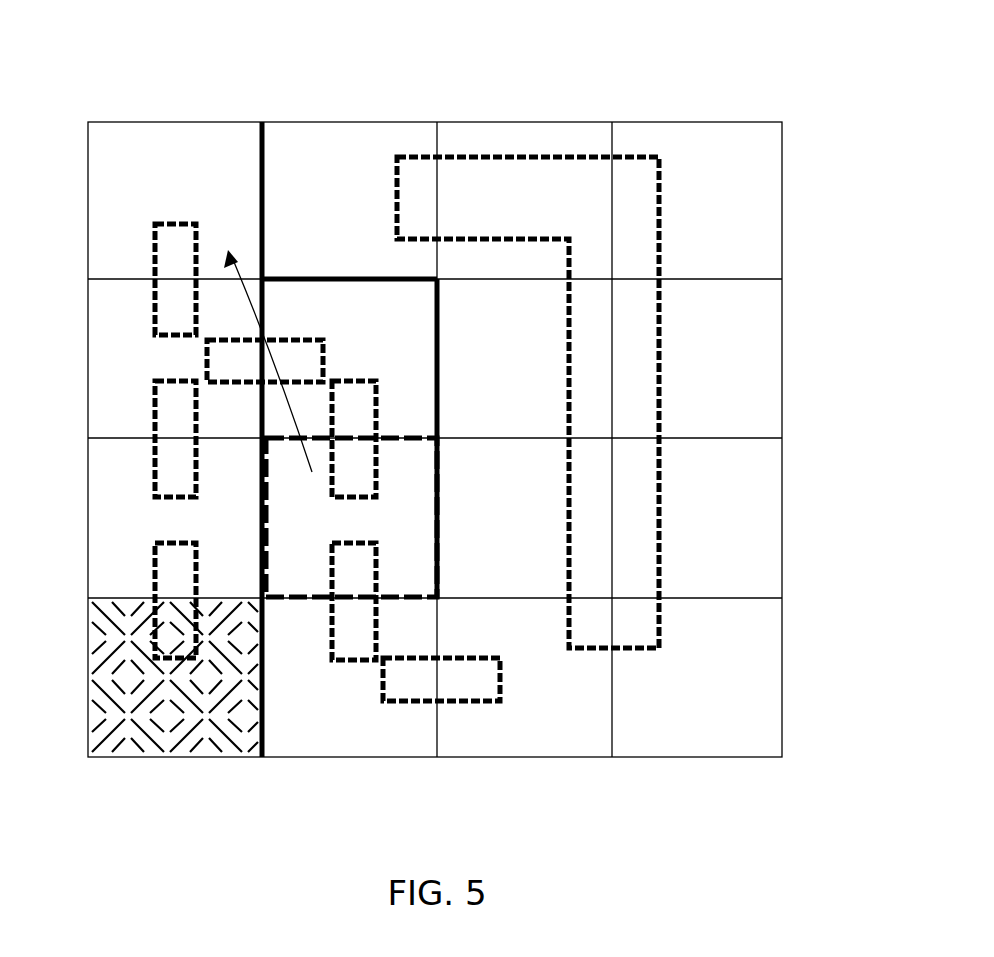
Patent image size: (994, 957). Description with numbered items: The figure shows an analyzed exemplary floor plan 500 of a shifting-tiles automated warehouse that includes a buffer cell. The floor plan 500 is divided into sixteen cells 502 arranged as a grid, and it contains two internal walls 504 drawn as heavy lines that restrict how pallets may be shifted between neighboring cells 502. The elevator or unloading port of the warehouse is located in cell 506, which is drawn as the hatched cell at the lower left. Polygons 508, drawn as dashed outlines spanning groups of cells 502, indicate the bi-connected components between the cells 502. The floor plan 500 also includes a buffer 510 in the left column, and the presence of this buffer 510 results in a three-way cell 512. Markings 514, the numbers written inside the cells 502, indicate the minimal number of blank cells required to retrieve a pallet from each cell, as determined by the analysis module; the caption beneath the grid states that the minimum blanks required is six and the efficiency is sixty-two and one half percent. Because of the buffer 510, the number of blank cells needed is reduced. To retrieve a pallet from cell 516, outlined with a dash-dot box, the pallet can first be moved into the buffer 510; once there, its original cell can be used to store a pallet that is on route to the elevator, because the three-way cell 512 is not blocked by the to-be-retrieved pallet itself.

The floor plan 500 is at (143, 86).
The cells 502 is at (333, 140).
The internal walls 504 is at (440, 360).
The cell containing the elevator or unloading port 506 is at (172, 745).
The polygons 508 is at (368, 380).
The buffer 510 is at (216, 195).
The three-way cell 512 is at (112, 355).
The markings 514 is at (528, 185).
The cell 516 is at (398, 520).